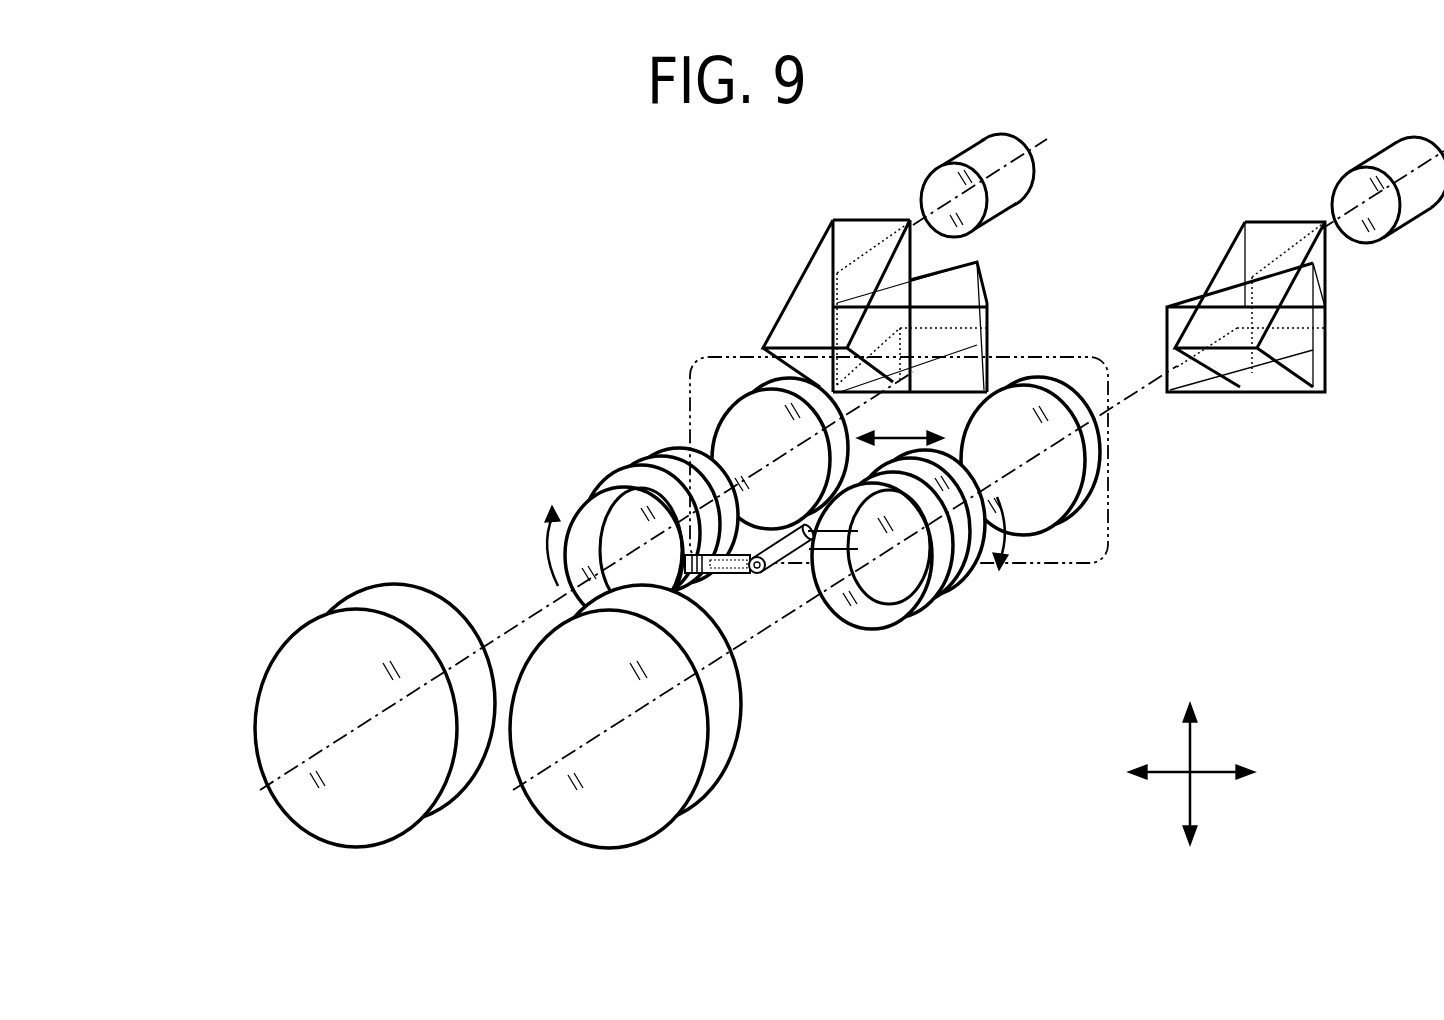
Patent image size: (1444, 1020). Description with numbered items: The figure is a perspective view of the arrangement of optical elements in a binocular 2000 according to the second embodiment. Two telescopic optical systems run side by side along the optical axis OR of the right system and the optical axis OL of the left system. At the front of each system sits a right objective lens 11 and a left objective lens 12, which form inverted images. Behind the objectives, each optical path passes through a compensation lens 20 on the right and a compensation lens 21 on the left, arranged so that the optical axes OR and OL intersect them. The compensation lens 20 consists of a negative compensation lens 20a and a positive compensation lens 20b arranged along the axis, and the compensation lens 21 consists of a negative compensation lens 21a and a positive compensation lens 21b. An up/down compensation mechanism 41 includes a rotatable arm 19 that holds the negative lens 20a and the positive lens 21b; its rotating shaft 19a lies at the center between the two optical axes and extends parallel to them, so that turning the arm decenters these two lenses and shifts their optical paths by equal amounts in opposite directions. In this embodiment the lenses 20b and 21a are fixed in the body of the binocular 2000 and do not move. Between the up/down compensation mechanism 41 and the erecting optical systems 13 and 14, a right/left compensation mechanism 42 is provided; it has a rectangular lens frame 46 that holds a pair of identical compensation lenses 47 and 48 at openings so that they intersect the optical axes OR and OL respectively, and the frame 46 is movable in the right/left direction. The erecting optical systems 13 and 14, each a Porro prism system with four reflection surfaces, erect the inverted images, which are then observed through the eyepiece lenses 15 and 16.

The binocular 2000 is at (477, 328).
The right objective lens 11 is at (310, 793).
The left objective lens 12 is at (568, 792).
The erecting optical system 13 is at (817, 290).
The erecting optical system 14 is at (1297, 313).
The eyepiece lens 15 is at (972, 158).
The eyepiece lens 16 is at (1386, 160).
The rotatable arm 19 is at (777, 608).
The rotating shaft 19a is at (800, 542).
The compensation lens 20 is at (625, 494).
The negative compensation lens 20a is at (624, 514).
The positive compensation lens 20b is at (667, 457).
The compensation lens 21 is at (959, 568).
The negative compensation lens 21a is at (937, 590).
The positive compensation lens 21b is at (973, 575).
The up/down compensation mechanism 41 is at (671, 468).
The right/left compensation mechanism 42 is at (1027, 532).
The rectangular lens frame 46 is at (1054, 356).
The compensation lens 47 is at (745, 402).
The compensation lens 48 is at (1047, 483).
The optical axis OR is at (337, 736).
The optical axis OL is at (600, 733).